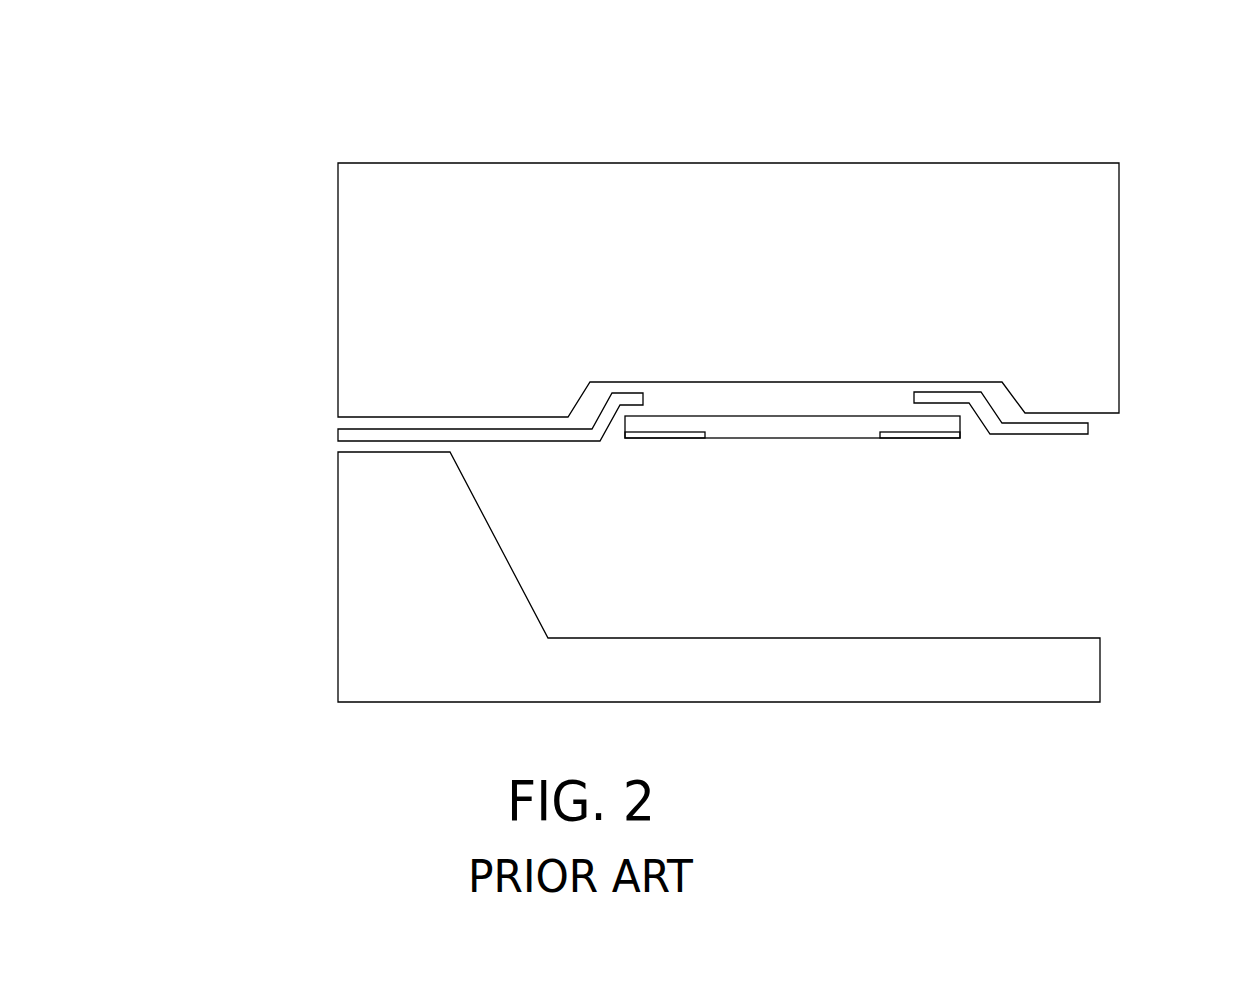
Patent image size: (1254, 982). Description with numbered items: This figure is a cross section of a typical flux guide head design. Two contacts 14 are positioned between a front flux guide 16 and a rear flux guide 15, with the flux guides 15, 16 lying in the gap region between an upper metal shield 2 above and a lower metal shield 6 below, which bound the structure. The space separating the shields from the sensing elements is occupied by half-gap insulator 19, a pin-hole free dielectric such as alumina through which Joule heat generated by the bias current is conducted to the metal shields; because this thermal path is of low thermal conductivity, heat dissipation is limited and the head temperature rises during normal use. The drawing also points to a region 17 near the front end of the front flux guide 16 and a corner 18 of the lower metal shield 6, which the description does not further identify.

The upper metal shield 2 is at (468, 197).
The lower metal shield 6 is at (480, 657).
The contacts 14 is at (677, 439).
The rear flux guide 15 is at (1090, 429).
The front flux guide 16 is at (338, 437).
The gap between upper die and beam 17 is at (295, 407).
The corner of lower die 18 is at (338, 453).
The half-gap insulator 19 is at (947, 588).